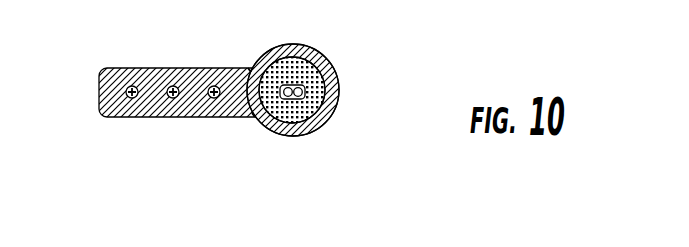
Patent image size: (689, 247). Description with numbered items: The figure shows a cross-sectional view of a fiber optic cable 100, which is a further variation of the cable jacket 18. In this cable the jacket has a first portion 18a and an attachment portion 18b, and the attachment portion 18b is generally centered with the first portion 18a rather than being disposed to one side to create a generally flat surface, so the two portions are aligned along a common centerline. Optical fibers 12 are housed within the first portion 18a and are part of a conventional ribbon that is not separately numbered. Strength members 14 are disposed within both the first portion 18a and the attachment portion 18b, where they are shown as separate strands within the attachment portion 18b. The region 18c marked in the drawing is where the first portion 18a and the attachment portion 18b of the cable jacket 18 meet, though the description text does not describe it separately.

The fiber optic cable 100 is at (107, 66).
The cable jacket 18 is at (103, 102).
The first portion 18a is at (335, 160).
The attachment portion 18b is at (247, 160).
The junction of jacket portions 18c is at (248, 68).
The strength members 14 is at (213, 99).
The optical fibers 12 is at (312, 109).